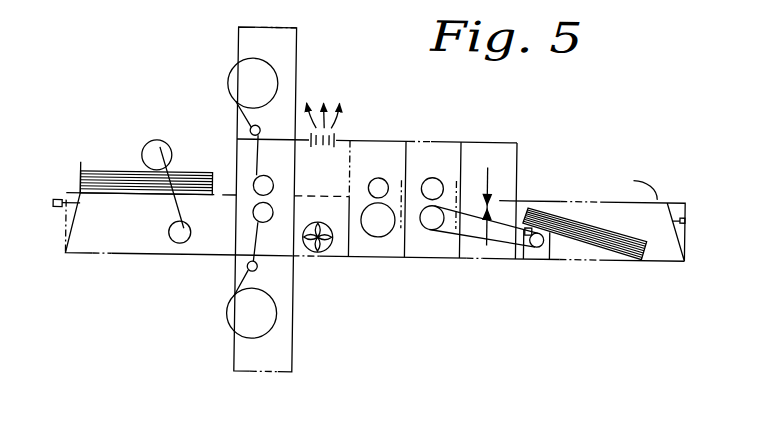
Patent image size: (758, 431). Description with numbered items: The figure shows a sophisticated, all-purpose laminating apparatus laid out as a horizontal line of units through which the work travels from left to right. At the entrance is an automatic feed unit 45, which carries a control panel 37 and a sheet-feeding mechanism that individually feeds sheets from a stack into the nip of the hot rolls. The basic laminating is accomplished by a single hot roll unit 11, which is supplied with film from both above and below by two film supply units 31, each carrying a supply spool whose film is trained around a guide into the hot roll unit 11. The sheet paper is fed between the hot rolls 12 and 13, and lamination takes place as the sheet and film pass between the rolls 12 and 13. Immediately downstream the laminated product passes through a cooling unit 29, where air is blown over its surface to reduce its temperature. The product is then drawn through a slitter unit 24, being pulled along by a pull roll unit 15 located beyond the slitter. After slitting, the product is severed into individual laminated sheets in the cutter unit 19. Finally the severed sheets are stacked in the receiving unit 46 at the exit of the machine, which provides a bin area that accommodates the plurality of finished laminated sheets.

The hot roll unit 11 is at (270, 240).
The hot roll 12 is at (253, 213).
The hot roll 13 is at (255, 180).
The pull roll unit 15 is at (432, 241).
The cutter unit 19 is at (497, 251).
The slitter unit 24 is at (383, 243).
The cooling unit 29 is at (331, 260).
The film supply unit 31 is at (279, 94).
The control panel 37 is at (72, 206).
The automatic feed unit 45 is at (152, 239).
The receiving unit 46 is at (613, 259).